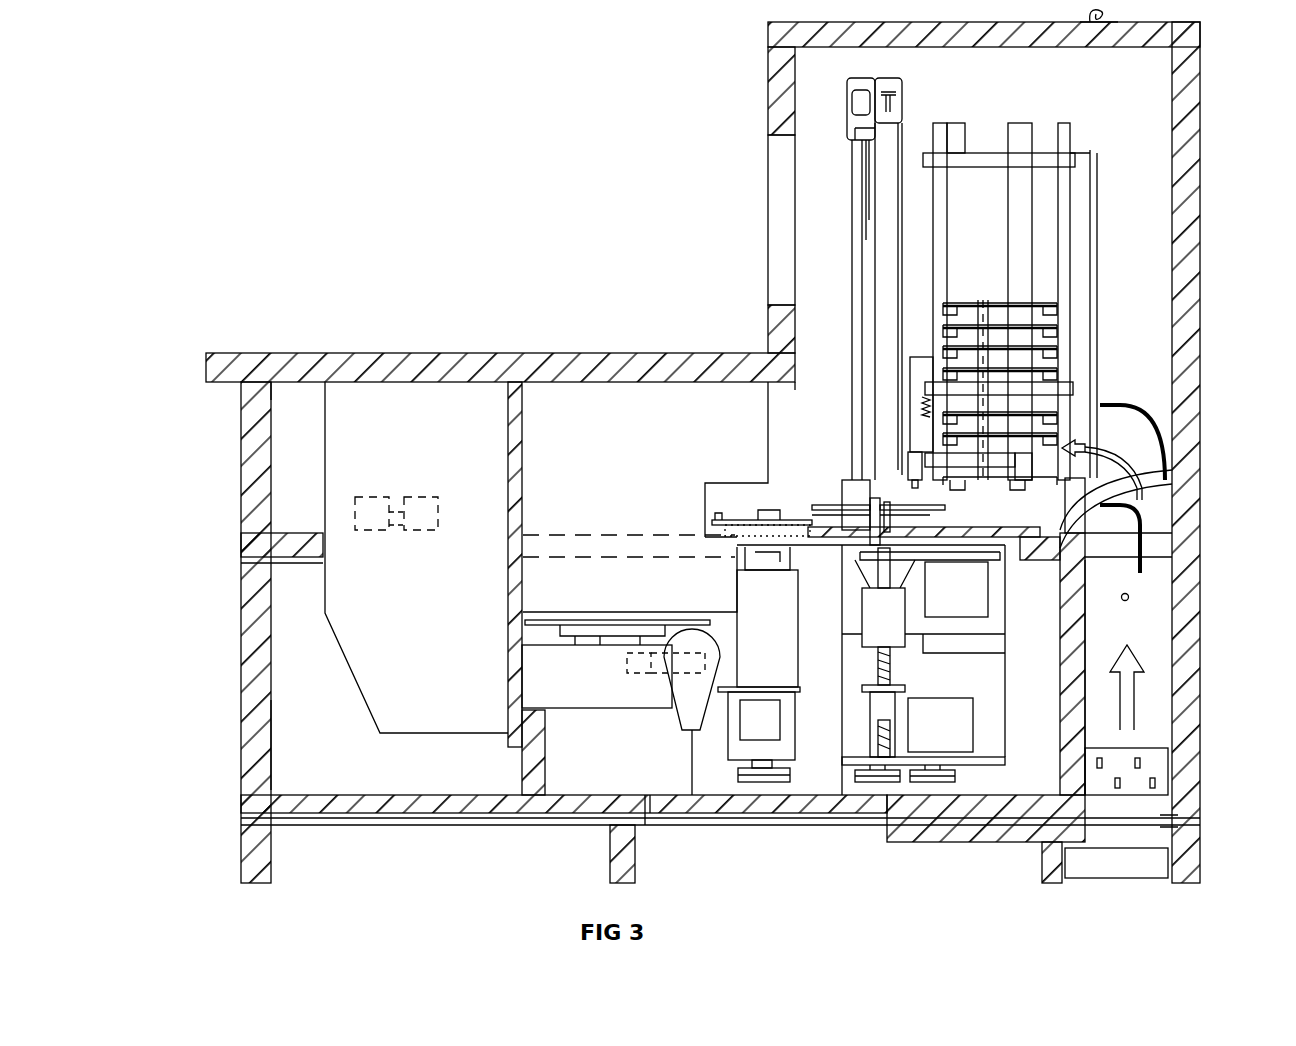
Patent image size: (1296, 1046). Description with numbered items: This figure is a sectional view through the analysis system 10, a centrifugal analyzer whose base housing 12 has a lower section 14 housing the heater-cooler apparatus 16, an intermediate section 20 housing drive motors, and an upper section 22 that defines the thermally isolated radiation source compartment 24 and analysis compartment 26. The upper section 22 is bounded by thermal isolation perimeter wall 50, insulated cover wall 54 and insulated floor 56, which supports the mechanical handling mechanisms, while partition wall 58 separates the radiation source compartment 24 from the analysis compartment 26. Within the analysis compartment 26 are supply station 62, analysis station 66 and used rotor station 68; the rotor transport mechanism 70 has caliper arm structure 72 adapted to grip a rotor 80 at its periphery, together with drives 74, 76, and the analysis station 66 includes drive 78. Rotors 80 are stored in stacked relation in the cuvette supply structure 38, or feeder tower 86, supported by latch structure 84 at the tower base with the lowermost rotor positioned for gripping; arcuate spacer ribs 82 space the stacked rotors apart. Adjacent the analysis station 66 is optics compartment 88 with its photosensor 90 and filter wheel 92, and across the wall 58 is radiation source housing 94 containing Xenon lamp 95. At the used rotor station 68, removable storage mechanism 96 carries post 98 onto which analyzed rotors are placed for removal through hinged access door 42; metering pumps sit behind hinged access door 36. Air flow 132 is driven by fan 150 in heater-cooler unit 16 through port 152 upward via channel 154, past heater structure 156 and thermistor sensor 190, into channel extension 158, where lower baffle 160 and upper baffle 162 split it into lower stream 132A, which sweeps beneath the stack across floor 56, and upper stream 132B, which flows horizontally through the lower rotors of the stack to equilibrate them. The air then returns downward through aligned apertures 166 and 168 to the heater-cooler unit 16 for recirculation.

The analysis system 10 is at (372, 248).
The base housing 12 is at (240, 403).
The lower section 14 is at (240, 862).
The heater-cooler apparatus 16 is at (610, 858).
The intermediate section 20 is at (216, 633).
The upper section 22 is at (210, 516).
The radiation source compartment 24 is at (300, 412).
The analysis compartment 26 is at (785, 412).
The hinged access door 36 is at (790, 175).
The cuvette supply structure 38 is at (1097, 136).
The hinged access door 42 is at (775, 115).
The thermal isolation perimeter wall 50 is at (241, 452).
The insulated cover wall 54 is at (676, 368).
The insulated floor 56 is at (1040, 530).
The partition wall 58 is at (506, 398).
The supply station 62 is at (1002, 507).
The analysis station 66 is at (745, 500).
The used rotor station 68 is at (840, 512).
The rotor transport mechanism 70 is at (873, 520).
The caliper arm structure 72 is at (832, 510).
The drive 74 is at (975, 603).
The drive 76 is at (960, 705).
The drive 78 is at (770, 670).
The rotor 80 is at (1055, 344).
The arcuate spacer ribs 82 is at (978, 300).
The latch structure 84 is at (962, 480).
The feeder tower 86 is at (1085, 258).
The optics compartment 88 is at (606, 498).
The photosensor 90 is at (627, 670).
The filter wheel 92 is at (706, 625).
The radiation source housing 94 is at (372, 690).
The Xenon lamp 95 is at (406, 532).
The removable storage mechanism 96 is at (846, 102).
The post 98 is at (892, 143).
The air flow 132 is at (1133, 715).
The lower stream 132A is at (1125, 475).
The upper stream 132B is at (1135, 455).
The fan 150 is at (1155, 860).
The port 152 is at (1162, 800).
The channel 154 is at (1170, 662).
The heater structure 156 is at (1140, 765).
The channel extension 158 is at (1175, 550).
The lower baffle 160 is at (1140, 510).
The upper baffle 162 is at (1150, 410).
The aperture 166 is at (655, 800).
The aperture 168 is at (655, 820).
The thermistor sensor 190 is at (1128, 597).